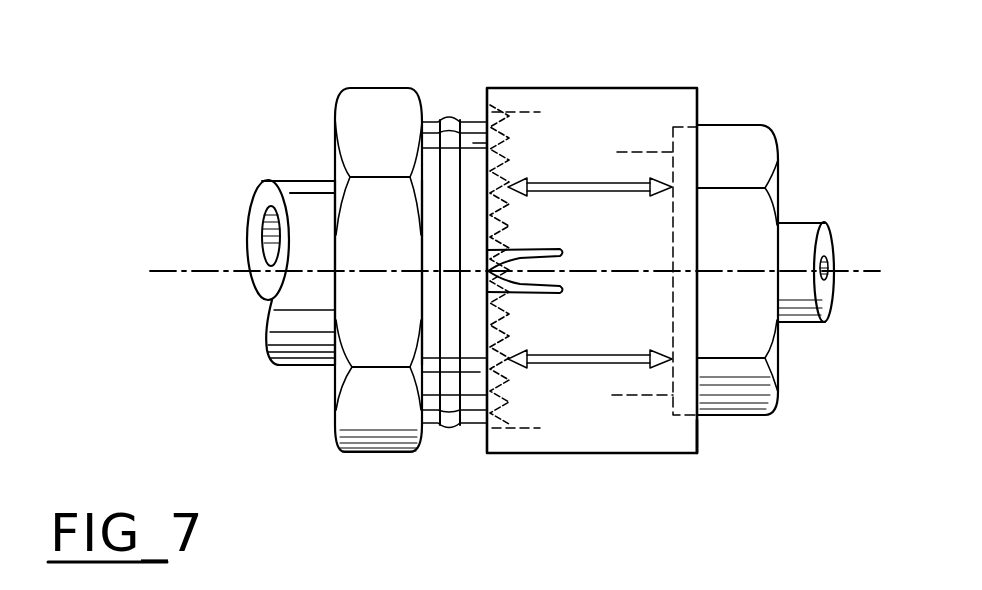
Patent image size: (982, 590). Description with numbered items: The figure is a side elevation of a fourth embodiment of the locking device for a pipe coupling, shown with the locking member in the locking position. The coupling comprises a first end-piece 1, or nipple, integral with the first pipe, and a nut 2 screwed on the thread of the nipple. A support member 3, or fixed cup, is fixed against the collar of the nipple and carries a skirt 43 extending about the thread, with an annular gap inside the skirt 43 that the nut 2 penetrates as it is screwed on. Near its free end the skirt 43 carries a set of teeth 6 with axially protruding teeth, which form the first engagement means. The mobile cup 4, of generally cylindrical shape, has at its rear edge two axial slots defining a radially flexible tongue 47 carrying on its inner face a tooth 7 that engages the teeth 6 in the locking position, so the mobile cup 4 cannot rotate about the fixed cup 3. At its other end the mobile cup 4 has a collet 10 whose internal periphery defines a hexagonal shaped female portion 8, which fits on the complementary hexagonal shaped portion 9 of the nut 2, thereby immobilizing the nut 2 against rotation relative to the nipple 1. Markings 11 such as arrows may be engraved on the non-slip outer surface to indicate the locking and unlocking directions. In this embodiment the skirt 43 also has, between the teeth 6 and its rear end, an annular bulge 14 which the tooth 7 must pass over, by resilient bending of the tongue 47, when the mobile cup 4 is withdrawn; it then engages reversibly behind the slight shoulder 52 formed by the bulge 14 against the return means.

The first end-piece 1 is at (368, 455).
The nut 2 is at (740, 378).
The support member 3 is at (476, 427).
The mobile cup 4 is at (653, 418).
The set of teeth 6 is at (476, 393).
The tooth 7 is at (490, 275).
The hexagonal shaped female portion 8 is at (682, 127).
The hexagonal shaped portion 9 is at (398, 455).
The collet 10 is at (700, 430).
The markings 11 is at (605, 355).
The annular bulge 14 is at (452, 118).
The skirt 43 is at (475, 145).
The tongue 47 is at (527, 291).
The shoulder 52 is at (483, 373).